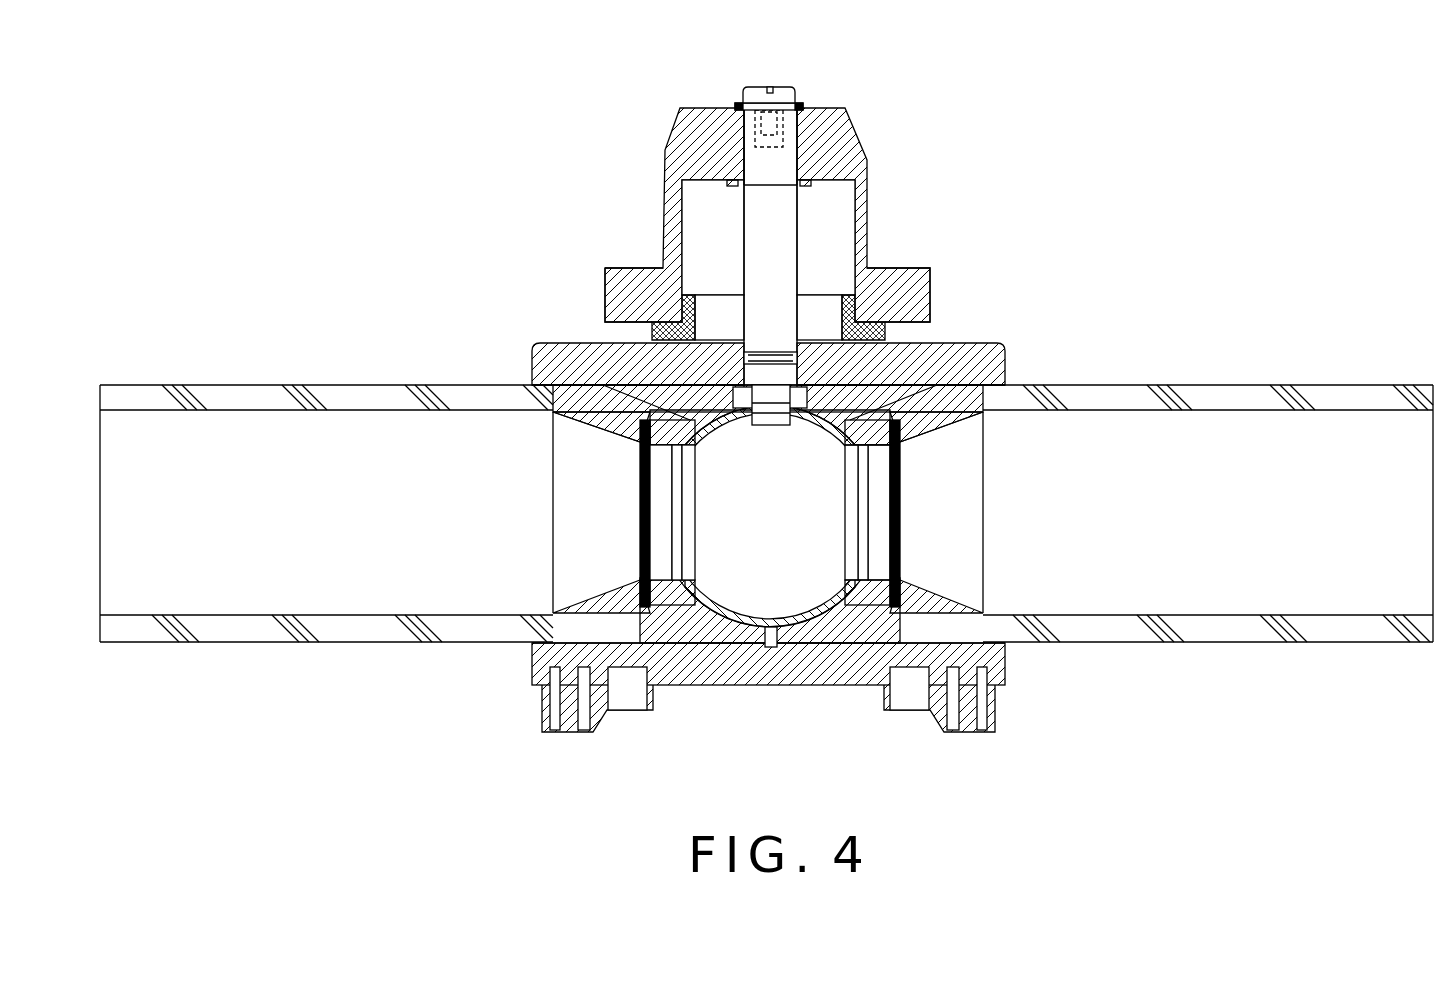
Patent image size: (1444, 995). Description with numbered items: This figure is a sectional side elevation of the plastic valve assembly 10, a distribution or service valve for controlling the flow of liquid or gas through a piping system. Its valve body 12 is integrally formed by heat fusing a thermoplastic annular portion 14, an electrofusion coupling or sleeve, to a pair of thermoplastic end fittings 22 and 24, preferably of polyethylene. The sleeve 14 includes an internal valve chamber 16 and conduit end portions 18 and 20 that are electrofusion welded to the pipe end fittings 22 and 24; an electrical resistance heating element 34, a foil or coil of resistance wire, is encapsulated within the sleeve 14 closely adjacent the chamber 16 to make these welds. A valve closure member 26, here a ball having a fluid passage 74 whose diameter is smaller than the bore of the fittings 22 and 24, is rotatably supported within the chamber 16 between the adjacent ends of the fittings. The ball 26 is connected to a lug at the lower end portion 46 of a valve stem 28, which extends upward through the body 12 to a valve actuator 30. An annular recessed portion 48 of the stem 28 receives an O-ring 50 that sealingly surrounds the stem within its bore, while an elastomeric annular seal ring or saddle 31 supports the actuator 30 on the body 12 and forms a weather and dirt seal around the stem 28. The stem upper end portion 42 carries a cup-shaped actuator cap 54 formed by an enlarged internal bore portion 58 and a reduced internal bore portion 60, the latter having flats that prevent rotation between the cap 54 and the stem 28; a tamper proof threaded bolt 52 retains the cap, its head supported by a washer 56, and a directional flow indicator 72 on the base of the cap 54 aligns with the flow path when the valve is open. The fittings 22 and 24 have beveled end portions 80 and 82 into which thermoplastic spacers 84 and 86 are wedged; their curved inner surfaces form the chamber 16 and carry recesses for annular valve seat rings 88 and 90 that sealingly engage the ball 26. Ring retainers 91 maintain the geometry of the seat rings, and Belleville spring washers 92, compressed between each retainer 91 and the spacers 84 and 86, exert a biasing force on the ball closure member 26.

The plastic valve assembly 10 is at (518, 155).
The valve body 12 is at (968, 316).
The thermoplastic annular portion 14 is at (635, 345).
The internal valve chamber 16 is at (590, 380).
The conduit end portion 18 is at (537, 352).
The conduit end portion 20 is at (997, 353).
The thermoplastic end fitting 22 is at (357, 393).
The thermoplastic end fitting 24 is at (1208, 395).
The valve closure member 26 is at (706, 432).
The valve stem 28 is at (782, 282).
The valve actuator 30 is at (645, 133).
The annular seal ring 31 is at (846, 318).
The electrical resistance heating element 34 is at (632, 362).
The stem upper end portion 42 is at (768, 152).
The stem lower end portion 46 is at (773, 407).
The annular recessed portion 48 is at (766, 352).
The O-ring 50 is at (742, 316).
The tamper proof threaded bolt 52 is at (787, 85).
The actuator cap 54 is at (847, 127).
The washer 56 is at (742, 103).
The enlarged internal bore portion 58 is at (842, 228).
The reduced internal bore portion 60 is at (795, 166).
The directional flow indicator 72 is at (905, 280).
The fluid passage 74 is at (690, 578).
The beveled end portion 80 is at (623, 400).
The beveled end portion 82 is at (897, 398).
The spacer 84 is at (593, 425).
The spacer 86 is at (948, 420).
The annular valve seat ring 88 is at (670, 436).
The annular valve seat ring 90 is at (863, 440).
The ring retainer 91 is at (663, 582).
The Belleville spring washer 92 is at (640, 523).